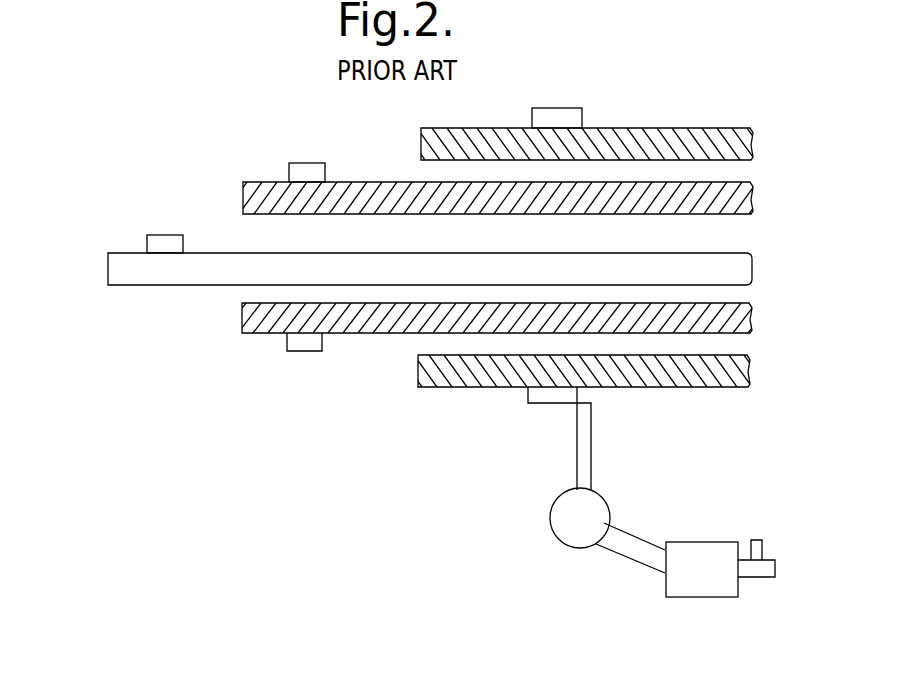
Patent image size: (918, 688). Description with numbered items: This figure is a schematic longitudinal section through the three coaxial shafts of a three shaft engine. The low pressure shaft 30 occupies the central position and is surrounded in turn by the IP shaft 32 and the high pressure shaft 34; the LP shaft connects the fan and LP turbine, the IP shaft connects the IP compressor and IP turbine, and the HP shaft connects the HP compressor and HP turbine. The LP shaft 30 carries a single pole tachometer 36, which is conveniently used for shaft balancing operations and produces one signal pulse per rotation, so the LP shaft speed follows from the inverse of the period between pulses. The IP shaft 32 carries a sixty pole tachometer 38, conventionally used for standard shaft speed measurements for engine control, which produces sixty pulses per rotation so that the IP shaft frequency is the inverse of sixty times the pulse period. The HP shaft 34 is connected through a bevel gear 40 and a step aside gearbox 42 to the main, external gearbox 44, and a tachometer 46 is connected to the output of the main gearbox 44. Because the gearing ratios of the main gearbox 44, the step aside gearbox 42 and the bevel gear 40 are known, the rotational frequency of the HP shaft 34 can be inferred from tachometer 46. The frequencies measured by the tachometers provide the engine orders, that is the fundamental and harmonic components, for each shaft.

The low pressure shaft 30 is at (108, 271).
The IP shaft 32 is at (241, 315).
The high pressure shaft 34 is at (418, 370).
The single pole tachometer 36 is at (163, 235).
The 60 pole tachometer 38 is at (309, 163).
The bevel gear 40 is at (527, 393).
The step aside gearbox 42 is at (549, 518).
The main gearbox 44 is at (695, 597).
The tachometer 46 is at (757, 540).